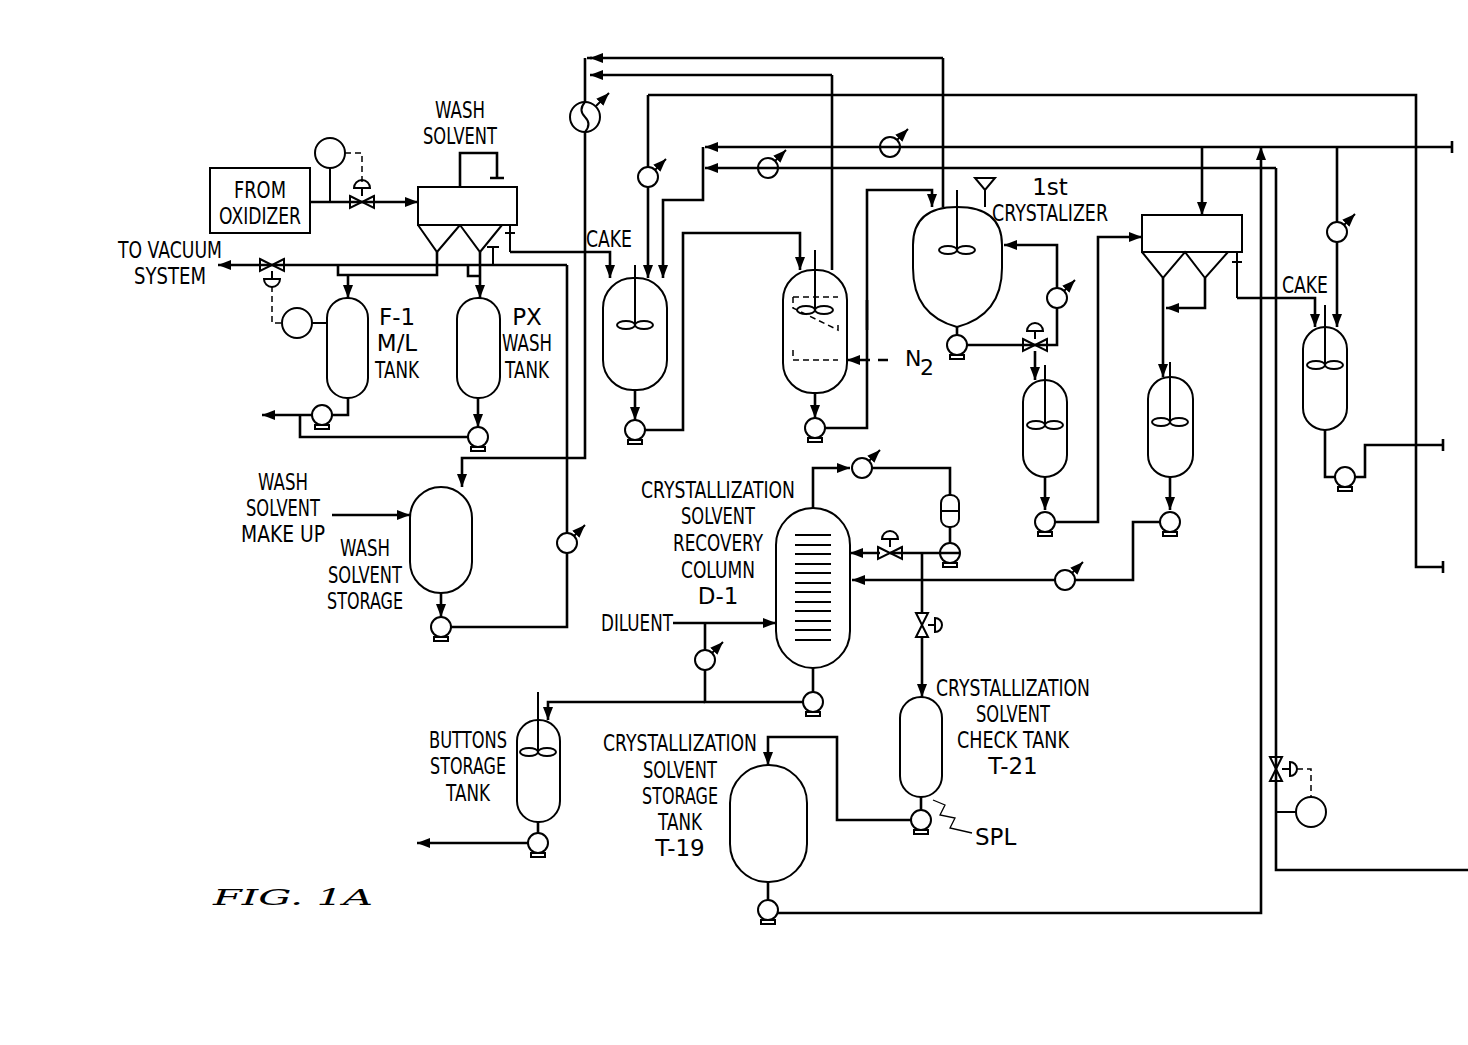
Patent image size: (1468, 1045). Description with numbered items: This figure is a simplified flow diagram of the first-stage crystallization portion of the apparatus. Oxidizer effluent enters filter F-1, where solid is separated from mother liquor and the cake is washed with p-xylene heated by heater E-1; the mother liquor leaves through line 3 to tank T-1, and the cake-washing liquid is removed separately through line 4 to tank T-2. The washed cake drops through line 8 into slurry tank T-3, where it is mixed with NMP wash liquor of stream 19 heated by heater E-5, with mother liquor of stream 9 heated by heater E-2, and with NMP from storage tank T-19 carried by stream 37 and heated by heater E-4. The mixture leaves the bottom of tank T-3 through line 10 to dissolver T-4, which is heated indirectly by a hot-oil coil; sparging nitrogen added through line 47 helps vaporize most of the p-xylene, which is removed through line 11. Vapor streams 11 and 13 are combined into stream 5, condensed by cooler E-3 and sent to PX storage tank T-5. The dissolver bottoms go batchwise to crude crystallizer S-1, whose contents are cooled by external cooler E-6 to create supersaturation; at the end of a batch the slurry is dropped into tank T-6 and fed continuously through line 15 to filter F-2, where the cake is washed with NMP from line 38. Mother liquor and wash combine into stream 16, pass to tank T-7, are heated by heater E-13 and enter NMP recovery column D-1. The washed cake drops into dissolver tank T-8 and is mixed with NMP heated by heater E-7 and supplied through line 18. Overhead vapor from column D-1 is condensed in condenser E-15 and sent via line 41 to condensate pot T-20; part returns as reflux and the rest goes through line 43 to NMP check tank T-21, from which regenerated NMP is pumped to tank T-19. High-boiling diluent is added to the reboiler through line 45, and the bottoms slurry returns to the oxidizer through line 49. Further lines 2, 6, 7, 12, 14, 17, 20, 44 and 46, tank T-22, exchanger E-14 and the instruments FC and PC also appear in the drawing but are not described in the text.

The wash solvent line 2 is at (590, 500).
The line 3 is at (437, 278).
The line 4 is at (485, 277).
The stream 5 is at (589, 447).
The wash solvent make-up line 6 is at (362, 512).
The mother liquor discharge line 7 is at (284, 412).
The line 8 is at (572, 252).
The stream 9 is at (724, 172).
The line 10 is at (688, 421).
The line 11 is at (830, 182).
The feed line to crystallizer 12 is at (867, 392).
The vapor stream 13 is at (946, 72).
The crystallizer feed line 14 is at (867, 320).
The line 15 is at (980, 348).
The stream 16 is at (1160, 318).
The cake line 17 is at (1250, 304).
The line 18 is at (1340, 196).
The stream 19 is at (643, 195).
The product line 20 is at (1430, 442).
The stream 37 is at (740, 147).
The line 38 is at (1200, 180).
The line 41 is at (912, 466).
The line 43 is at (926, 646).
The column bottoms pump line 44 is at (818, 690).
The line 45 is at (697, 628).
The filtrate feed line to column 46 is at (1134, 556).
The line 47 is at (783, 350).
The line 49 is at (462, 847).
The filter F-1 is at (467, 226).
The filter F-2 is at (1192, 256).
The tank T-1 is at (327, 346).
The tank T-2 is at (497, 396).
The slurry tank T-3 is at (614, 388).
The dissolver T-4 is at (783, 312).
The PX storage tank T-5 is at (441, 564).
The tank T-6 is at (1023, 442).
The tank T-7 is at (1193, 448).
The dissolver tank T-8 is at (1347, 394).
The NMP storage tank T-19 is at (768, 844).
The condensate pot T-20 is at (960, 503).
The NMP check tank T-21 is at (855, 765).
The buttons storage tank T-22 is at (561, 813).
The crude crystallizer S-1 is at (957, 268).
The NMP recovery column D-1 is at (813, 612).
The heater E-1 is at (576, 552).
The heater E-2 is at (764, 180).
The cooler E-3 is at (572, 108).
The heater E-4 is at (882, 140).
The heater E-5 is at (640, 170).
The external cooler E-6 is at (1052, 290).
The heater E-7 is at (1348, 240).
The heater E-13 is at (1073, 590).
The heat exchanger E-14 is at (725, 665).
The condenser E-15 is at (866, 479).
The flow controller FC is at (338, 170).
The pressure controller PC is at (804, 567).